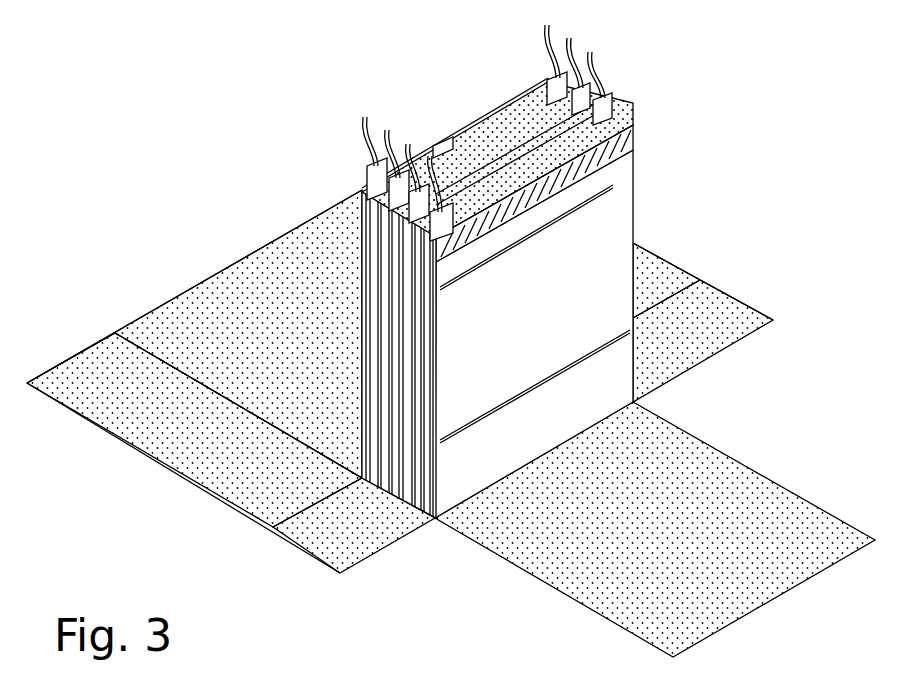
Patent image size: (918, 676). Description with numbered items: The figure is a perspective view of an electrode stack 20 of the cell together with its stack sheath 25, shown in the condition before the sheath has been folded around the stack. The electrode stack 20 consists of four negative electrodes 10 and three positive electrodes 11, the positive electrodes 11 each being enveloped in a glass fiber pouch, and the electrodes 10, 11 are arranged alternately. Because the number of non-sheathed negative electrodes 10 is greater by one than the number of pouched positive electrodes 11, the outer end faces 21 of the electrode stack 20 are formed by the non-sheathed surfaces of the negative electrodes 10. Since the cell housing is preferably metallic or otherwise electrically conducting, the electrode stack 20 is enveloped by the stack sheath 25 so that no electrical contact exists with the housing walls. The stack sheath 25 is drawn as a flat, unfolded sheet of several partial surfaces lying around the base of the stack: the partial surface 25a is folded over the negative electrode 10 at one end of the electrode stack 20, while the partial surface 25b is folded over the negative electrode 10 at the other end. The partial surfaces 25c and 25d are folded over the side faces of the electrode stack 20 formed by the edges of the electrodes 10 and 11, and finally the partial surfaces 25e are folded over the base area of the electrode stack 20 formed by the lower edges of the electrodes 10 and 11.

The negative electrodes 10 is at (435, 470).
The positive electrodes 11 is at (404, 388).
The electrode stack 20 is at (665, 130).
The outer end faces 21 is at (539, 314).
The stack sheath 25 is at (196, 226).
The partial surface 25a is at (585, 562).
The partial surface 25b is at (312, 270).
The partial surface 25c is at (120, 375).
The partial surface 25d is at (664, 280).
The partial surfaces 25e is at (345, 525).